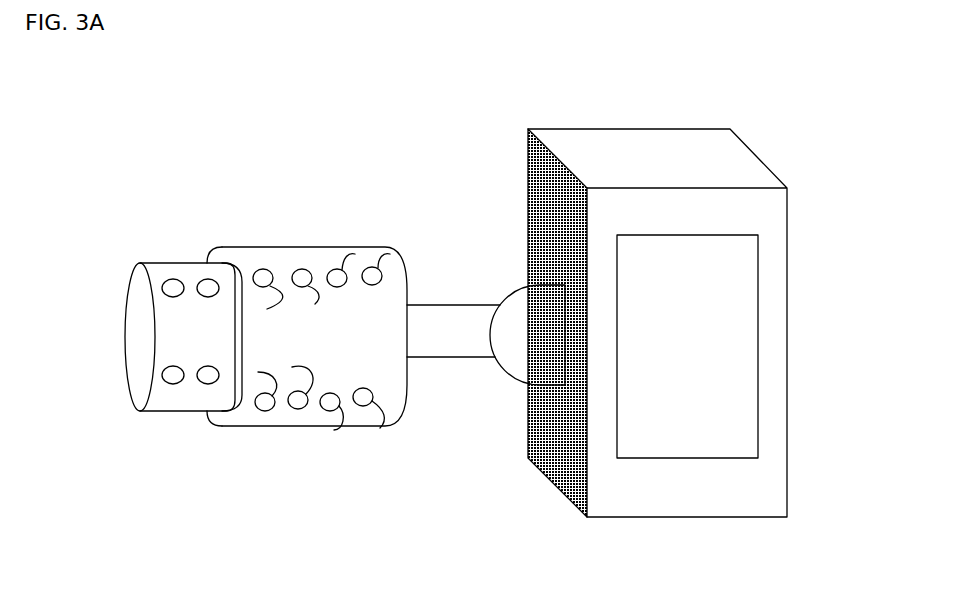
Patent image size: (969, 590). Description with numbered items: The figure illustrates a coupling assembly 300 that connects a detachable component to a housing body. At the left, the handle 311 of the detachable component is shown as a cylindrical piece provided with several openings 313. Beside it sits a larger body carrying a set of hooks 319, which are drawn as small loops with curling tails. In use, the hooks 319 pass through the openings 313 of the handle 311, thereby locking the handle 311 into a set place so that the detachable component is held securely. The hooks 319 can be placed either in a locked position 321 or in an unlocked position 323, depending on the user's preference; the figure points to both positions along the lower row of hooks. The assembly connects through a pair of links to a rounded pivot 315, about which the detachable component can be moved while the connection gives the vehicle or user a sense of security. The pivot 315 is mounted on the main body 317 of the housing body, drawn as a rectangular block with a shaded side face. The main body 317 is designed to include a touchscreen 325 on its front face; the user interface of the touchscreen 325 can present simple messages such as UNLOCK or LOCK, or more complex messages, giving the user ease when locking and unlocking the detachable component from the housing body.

The coupling assembly 300 is at (272, 156).
The handle 311 is at (134, 300).
The openings 313 is at (204, 281).
The pivot 315 is at (521, 305).
The main body 317 is at (716, 161).
The hooks 319 is at (327, 309).
The locked position 321 is at (293, 416).
The unlocked position 323 is at (394, 418).
The touchscreen 325 is at (737, 377).